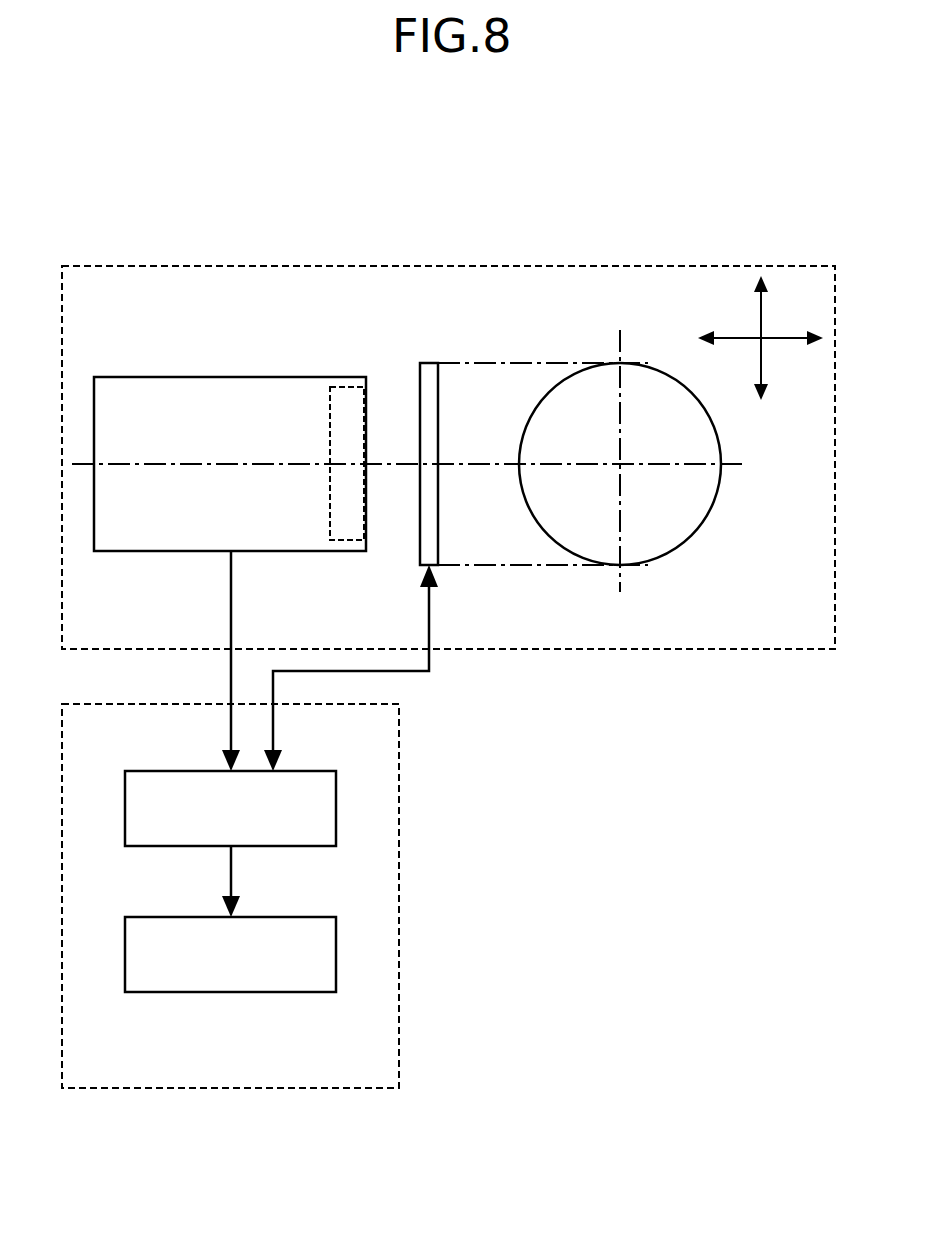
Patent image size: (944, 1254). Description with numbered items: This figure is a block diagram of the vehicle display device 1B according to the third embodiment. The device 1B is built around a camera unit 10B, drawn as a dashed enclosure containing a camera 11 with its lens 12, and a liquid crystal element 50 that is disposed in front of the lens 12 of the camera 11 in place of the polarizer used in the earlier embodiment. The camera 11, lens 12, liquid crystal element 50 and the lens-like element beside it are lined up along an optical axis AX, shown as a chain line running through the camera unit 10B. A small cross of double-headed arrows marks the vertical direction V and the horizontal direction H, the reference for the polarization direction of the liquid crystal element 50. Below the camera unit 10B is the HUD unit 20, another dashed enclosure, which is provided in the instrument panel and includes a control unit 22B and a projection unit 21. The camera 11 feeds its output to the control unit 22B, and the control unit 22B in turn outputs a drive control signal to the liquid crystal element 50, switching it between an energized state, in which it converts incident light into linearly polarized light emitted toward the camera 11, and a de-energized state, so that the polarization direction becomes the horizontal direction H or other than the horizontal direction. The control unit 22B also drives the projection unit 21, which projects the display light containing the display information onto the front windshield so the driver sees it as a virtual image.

The vehicle display device 1B is at (438, 170).
The camera unit 10B is at (600, 266).
The camera 11 is at (164, 377).
The lens 12 is at (347, 387).
The liquid crystal element 50 is at (561, 383).
The optical axis AX is at (82, 466).
The vertical direction V is at (760, 317).
The horizontal direction H is at (785, 339).
The HUD unit 20 is at (352, 705).
The control unit 22B is at (283, 772).
The projection unit 21 is at (288, 918).